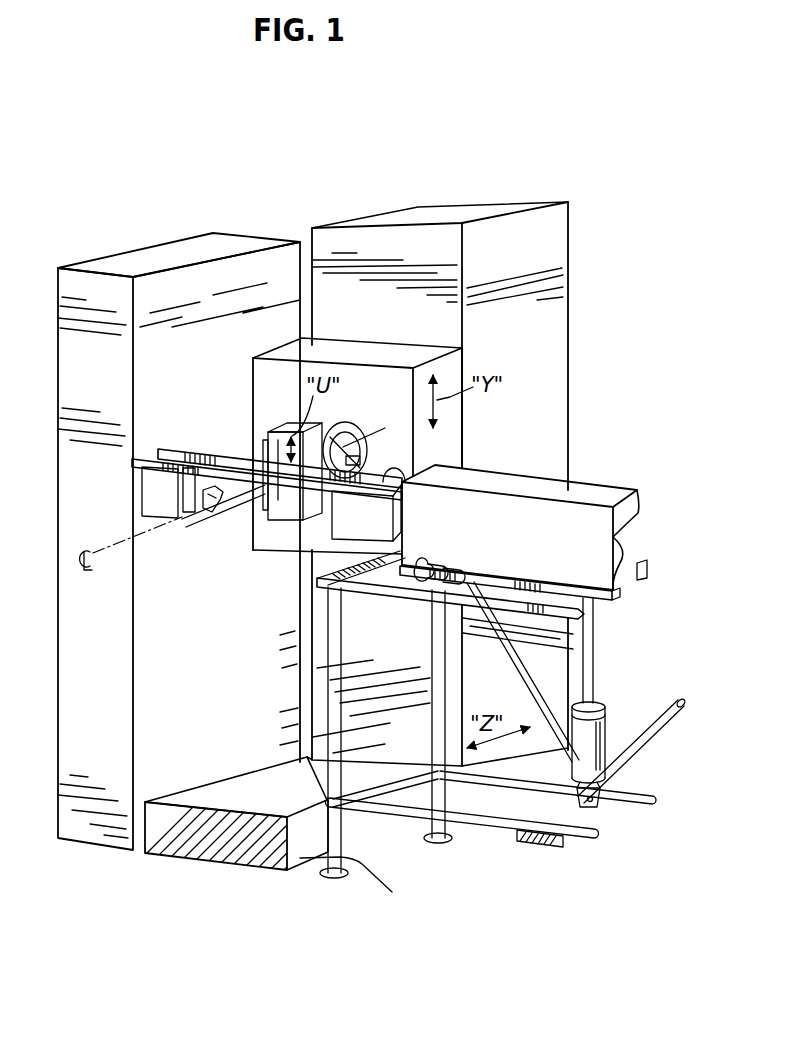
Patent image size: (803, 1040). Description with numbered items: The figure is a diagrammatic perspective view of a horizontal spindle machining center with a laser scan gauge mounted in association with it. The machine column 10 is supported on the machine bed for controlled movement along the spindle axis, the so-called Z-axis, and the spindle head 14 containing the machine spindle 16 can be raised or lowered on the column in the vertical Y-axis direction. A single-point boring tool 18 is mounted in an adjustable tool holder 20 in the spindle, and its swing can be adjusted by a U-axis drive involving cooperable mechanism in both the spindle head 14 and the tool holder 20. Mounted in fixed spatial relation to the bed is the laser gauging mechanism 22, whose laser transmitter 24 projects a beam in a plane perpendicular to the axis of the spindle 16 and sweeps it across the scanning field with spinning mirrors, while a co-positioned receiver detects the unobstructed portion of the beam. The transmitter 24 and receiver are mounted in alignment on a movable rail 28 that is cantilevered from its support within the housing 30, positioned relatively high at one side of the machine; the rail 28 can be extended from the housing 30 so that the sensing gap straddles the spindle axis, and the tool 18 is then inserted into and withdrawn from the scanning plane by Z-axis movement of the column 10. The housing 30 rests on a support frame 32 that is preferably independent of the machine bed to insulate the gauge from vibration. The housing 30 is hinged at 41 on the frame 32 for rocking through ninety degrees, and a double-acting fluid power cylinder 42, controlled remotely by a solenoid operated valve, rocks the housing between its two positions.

The machine column 10 is at (339, 546).
The spindle head 14 is at (447, 449).
The machine spindle 16 is at (352, 437).
The single-point boring tool 18 is at (240, 500).
The adjustable tool holder 20 is at (268, 447).
The laser gauging mechanism 22 is at (165, 447).
The laser transmitter 24 is at (370, 523).
The movable rail 28 is at (408, 486).
The housing 30 is at (540, 551).
The support frame 32 is at (222, 641).
The hinge 41 is at (463, 532).
The double-acting fluid power cylinder 42 is at (605, 736).